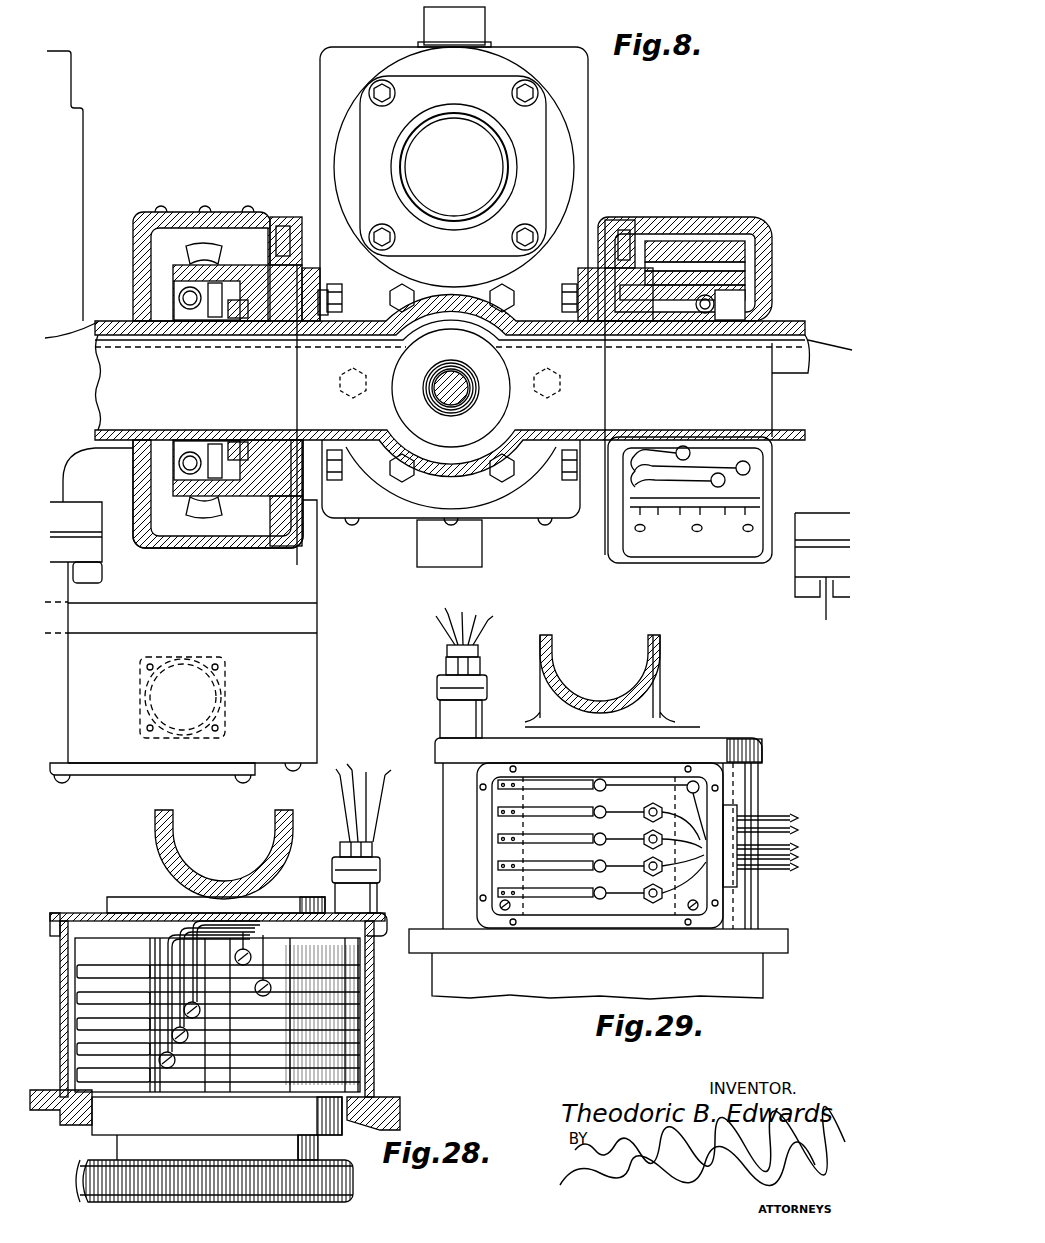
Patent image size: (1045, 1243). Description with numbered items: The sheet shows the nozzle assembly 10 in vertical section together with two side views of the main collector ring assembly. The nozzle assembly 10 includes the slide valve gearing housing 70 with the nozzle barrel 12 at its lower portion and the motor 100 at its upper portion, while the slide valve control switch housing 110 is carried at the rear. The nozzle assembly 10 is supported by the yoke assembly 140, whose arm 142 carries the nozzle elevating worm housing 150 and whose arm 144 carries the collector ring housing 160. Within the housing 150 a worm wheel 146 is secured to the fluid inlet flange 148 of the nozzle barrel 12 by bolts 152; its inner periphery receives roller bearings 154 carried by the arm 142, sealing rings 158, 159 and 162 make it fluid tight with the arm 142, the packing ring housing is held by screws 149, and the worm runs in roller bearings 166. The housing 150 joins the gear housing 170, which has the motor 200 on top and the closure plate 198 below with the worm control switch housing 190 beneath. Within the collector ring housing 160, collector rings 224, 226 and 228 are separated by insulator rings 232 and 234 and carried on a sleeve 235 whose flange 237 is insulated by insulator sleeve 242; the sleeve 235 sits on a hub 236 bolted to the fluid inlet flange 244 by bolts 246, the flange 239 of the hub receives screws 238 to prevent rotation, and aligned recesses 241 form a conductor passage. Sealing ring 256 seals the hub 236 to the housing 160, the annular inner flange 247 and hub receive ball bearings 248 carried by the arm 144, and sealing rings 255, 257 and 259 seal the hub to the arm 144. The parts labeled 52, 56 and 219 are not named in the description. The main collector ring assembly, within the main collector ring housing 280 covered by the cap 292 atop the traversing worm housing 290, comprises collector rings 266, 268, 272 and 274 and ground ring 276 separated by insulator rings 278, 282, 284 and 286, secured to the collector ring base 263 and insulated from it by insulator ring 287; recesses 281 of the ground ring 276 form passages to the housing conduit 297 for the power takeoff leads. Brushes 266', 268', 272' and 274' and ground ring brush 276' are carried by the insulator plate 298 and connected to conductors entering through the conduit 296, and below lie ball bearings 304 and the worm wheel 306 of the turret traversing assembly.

In FIG. 8, the nozzle assembly 10 is at (380, 462).
In FIG. 8, the nozzle barrel 12 is at (432, 478).
In FIG. 8, the drive shaft 52 is at (432, 395).
In FIG. 8, the bolts 56 is at (441, 281).
In FIG. 8, the slide valve gearing housing 70 is at (415, 72).
In FIG. 8, the motor 100 is at (454, 167).
In FIG. 8, the slide valve control switch housing 110 is at (592, 152).
In FIG. 29, the yoke assembly 140 is at (672, 690).
In FIG. 28, the yoke assembly 140 is at (285, 840).
In FIG. 8, the arm 142 is at (75, 383).
In FIG. 8, the arm 144 is at (729, 519).
In FIG. 8, the worm wheel 146 is at (185, 250).
In FIG. 8, the fluid inlet flange 148 is at (312, 268).
In FIG. 8, the screws 149 is at (300, 224).
In FIG. 8, the nozzle elevating worm housing 150 is at (133, 272).
In FIG. 8, the bolts 152 is at (330, 290).
In FIG. 8, the roller bearings 154 is at (183, 337).
In FIG. 8, the sealing ring 158 is at (278, 337).
In FIG. 8, the sealing ring 159 is at (250, 337).
In FIG. 8, the collector ring housing 160 is at (778, 282).
In FIG. 8, the sealing ring 162 is at (238, 430).
In FIG. 8, the roller bearings 166 is at (305, 240).
In FIG. 8, the gear housing 170 is at (300, 572).
In FIG. 8, the worm control switch housing 190 is at (318, 683).
In FIG. 8, the closure plate 198 is at (310, 634).
In FIG. 8, the motor 200 is at (83, 200).
In FIG. 28, the terminal screws 219 is at (185, 1080).
In FIG. 8, the collector ring 224 is at (694, 240).
In FIG. 8, the collector ring 226 is at (748, 222).
In FIG. 8, the collector ring 228 is at (755, 244).
In FIG. 8, the insulator ring 232 is at (718, 240).
In FIG. 8, the insulator ring 234 is at (775, 225).
In FIG. 8, the sleeve 235 is at (748, 302).
In FIG. 8, the hub 236 is at (628, 345).
In FIG. 8, the flange 237 is at (650, 235).
In FIG. 8, the screws 238 is at (760, 262).
In FIG. 8, the flange 239 is at (640, 240).
In FIG. 8, the recesses 241 is at (800, 560).
In FIG. 8, the insulator sleeve 242 is at (680, 240).
In FIG. 8, the fluid inlet flange 244 is at (570, 288).
In FIG. 8, the bolts 246 is at (545, 290).
In FIG. 8, the annular inner flange 247 is at (770, 318).
In FIG. 8, the ball bearings 248 is at (735, 345).
In FIG. 8, the sealing ring 255 is at (578, 345).
In FIG. 8, the sealing ring 256 is at (602, 260).
In FIG. 8, the sealing ring 257 is at (805, 345).
In FIG. 8, the sealing ring 259 is at (682, 345).
In FIG. 28, the collector ring base 263 is at (372, 1098).
In FIG. 28, the collector ring 266 is at (397, 988).
In FIG. 29, the brush 266' is at (634, 805).
In FIG. 28, the collector ring 268 is at (430, 1022).
In FIG. 29, the brush 268' is at (633, 832).
In FIG. 28, the collector ring 272 is at (408, 1052).
In FIG. 29, the brush 272' is at (633, 858).
In FIG. 28, the collector ring 274 is at (402, 1076).
In FIG. 29, the brush 274' is at (632, 884).
In FIG. 28, the ground ring 276 is at (321, 1014).
In FIG. 29, the ground ring brush 276' is at (571, 817).
In FIG. 28, the insulator ring 278 is at (372, 970).
In FIG. 29, the main collector ring housing 280 is at (441, 836).
In FIG. 28, the main collector ring housing 280 is at (441, 836).
In FIG. 28, the recesses 281 is at (185, 945).
In FIG. 28, the insulator ring 282 is at (368, 1006).
In FIG. 28, the insulator ring 284 is at (366, 1032).
In FIG. 28, the insulator ring 286 is at (368, 1060).
In FIG. 28, the insulator ring 287 is at (368, 1082).
In FIG. 29, the traversing worm housing 290 is at (768, 1002).
In FIG. 29, the cap 292 is at (750, 763).
In FIG. 28, the cap 292 is at (66, 914).
In FIG. 29, the conduit 296 is at (740, 810).
In FIG. 29, the housing conduit 297 is at (440, 722).
In FIG. 28, the housing conduit 297 is at (380, 905).
In FIG. 29, the insulator plate 298 is at (622, 905).
In FIG. 28, the ball bearings 304 is at (225, 1088).
In FIG. 28, the worm wheel 306 is at (195, 1170).